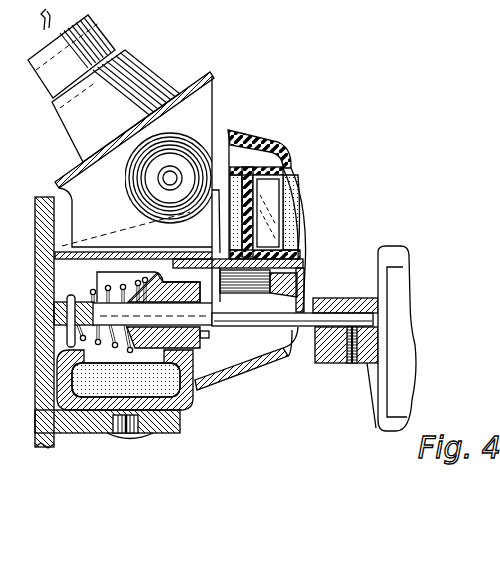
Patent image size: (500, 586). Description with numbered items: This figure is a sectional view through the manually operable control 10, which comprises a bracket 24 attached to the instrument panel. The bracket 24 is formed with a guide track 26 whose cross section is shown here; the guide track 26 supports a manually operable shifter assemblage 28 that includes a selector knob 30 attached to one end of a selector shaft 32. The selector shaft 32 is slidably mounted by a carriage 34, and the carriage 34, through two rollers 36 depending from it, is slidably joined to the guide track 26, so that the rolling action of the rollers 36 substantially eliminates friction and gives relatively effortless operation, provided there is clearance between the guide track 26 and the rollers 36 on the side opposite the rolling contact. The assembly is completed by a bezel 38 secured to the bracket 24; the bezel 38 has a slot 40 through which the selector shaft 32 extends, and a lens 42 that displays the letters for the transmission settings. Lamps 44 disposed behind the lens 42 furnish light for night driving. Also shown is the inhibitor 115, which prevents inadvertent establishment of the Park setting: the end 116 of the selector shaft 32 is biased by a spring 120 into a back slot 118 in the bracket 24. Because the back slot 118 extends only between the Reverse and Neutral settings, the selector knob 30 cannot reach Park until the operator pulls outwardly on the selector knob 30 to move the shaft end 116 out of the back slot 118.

The manually operable control 10 is at (302, 208).
The bracket 24 is at (34, 196).
The guide track 26 is at (192, 398).
The shifter assemblage 28 is at (306, 290).
The selector knob 30 is at (404, 247).
The selector shaft 32 is at (240, 318).
The carriage 34 is at (193, 352).
The rollers 36 is at (176, 393).
The bezel 38 is at (264, 136).
The slot 40 is at (299, 331).
The lens 42 is at (281, 156).
The lamps 44 is at (200, 148).
The inhibitor 115 is at (47, 329).
The end of the selector shaft 116 is at (47, 313).
The back slot 118 is at (50, 348).
The spring 120 is at (84, 274).